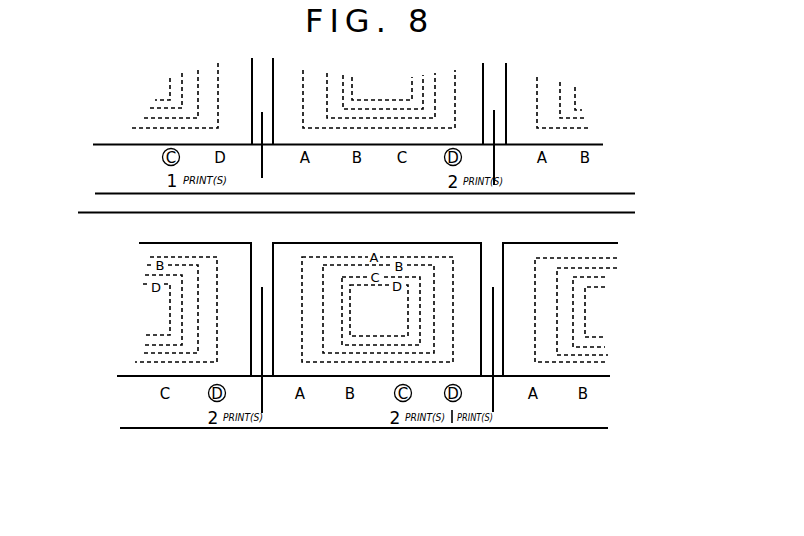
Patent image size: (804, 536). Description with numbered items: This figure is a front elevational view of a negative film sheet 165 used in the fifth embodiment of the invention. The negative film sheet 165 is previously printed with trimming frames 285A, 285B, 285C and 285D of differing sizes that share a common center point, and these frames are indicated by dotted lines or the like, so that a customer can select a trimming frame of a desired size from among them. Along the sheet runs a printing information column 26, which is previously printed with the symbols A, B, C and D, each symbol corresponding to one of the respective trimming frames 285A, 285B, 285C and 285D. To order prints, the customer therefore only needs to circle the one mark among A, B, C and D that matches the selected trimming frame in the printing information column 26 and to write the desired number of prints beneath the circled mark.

The printing information column 26 is at (525, 183).
The negative film sheet 165 is at (492, 437).
The trimming frame 285A is at (308, 257).
The trimming frame 285B is at (413, 265).
The trimming frame 285C is at (422, 278).
The trimming frame 285D is at (410, 307).